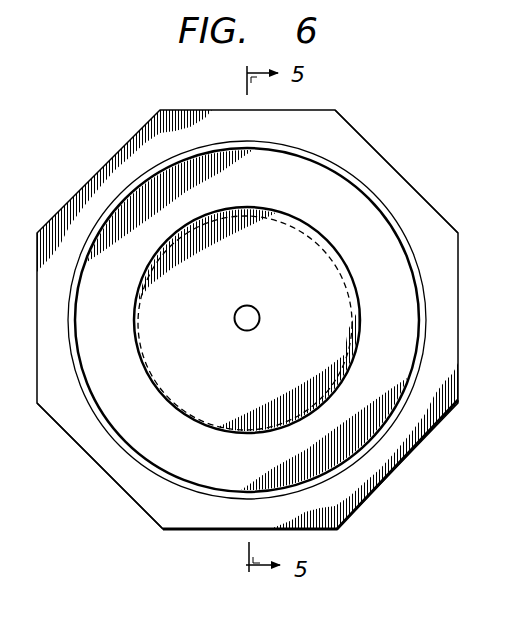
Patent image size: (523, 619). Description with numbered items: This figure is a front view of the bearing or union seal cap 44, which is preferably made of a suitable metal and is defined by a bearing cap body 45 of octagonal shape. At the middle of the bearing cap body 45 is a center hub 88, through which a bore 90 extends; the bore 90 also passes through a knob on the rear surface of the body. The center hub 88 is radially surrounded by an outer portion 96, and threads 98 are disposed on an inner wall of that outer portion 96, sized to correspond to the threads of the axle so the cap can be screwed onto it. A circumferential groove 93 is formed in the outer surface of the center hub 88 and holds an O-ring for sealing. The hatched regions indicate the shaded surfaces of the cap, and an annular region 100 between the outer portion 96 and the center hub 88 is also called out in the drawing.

The bearing cap 44 is at (370, 93).
The bearing cap body 45 is at (408, 172).
The center hub 88 is at (261, 394).
The bore 90 is at (234, 318).
The circumferential groove 93 is at (297, 226).
The outer portion 96 is at (132, 487).
The threads 98 is at (110, 428).
The annular face 100 is at (222, 470).